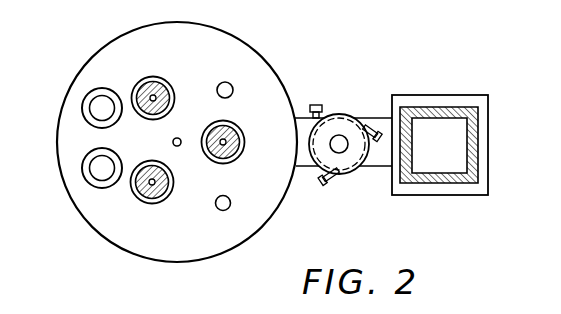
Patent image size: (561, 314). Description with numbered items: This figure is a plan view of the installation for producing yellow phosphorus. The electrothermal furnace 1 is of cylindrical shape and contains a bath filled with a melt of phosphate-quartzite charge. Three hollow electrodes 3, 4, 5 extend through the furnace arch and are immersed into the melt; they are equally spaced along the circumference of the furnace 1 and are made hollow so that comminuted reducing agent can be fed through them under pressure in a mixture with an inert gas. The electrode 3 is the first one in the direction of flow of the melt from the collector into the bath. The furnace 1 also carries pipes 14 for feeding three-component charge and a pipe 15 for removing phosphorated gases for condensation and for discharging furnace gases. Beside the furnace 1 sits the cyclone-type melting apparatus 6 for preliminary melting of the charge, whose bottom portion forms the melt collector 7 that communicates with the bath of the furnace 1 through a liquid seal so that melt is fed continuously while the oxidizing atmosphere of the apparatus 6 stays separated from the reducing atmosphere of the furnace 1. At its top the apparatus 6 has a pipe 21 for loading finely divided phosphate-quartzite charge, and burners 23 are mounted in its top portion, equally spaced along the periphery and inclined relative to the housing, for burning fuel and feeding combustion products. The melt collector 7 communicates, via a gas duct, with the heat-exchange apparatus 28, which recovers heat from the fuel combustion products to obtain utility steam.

The electrothermal furnace 1 is at (274, 61).
The hollow electrode 3 is at (238, 157).
The hollow electrode 4 is at (167, 200).
The hollow electrode 5 is at (148, 76).
The cyclone-type melting apparatus 6 is at (347, 141).
The melt collector 7 is at (300, 116).
The pipe for feeding charge 14 is at (231, 208).
The pipe for removing phosphorated gases 15 is at (88, 182).
The pipe for loading charge 21 is at (345, 151).
The burner 23 is at (320, 185).
The heat-exchange apparatus 28 is at (456, 93).